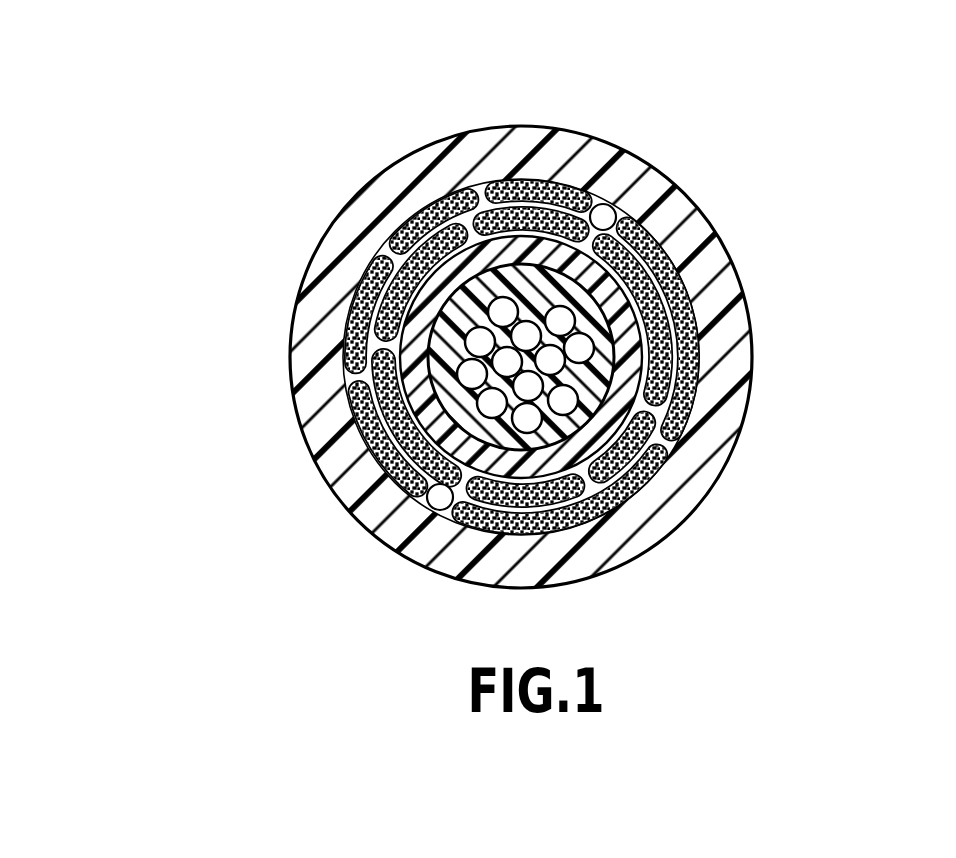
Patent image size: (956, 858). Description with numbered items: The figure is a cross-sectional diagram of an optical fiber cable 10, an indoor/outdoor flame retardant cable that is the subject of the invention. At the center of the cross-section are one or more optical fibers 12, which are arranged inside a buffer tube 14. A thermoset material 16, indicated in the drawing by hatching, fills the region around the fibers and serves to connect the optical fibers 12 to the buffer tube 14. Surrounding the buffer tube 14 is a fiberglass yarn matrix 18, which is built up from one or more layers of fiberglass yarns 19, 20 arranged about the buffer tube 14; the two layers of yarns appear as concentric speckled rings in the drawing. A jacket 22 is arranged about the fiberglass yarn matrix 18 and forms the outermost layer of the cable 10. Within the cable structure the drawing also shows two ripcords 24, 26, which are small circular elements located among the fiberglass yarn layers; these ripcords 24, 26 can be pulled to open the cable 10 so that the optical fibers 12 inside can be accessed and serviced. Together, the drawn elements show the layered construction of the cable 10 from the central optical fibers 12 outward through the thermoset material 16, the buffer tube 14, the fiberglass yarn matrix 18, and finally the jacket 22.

The cable 10 is at (445, 332).
The optical fibers 12 is at (583, 342).
The buffer tube 14 is at (405, 308).
The thermoset material 16 is at (437, 360).
The fiberglass yarn matrix 18 is at (400, 221).
The fiberglass yarns 19 is at (657, 445).
The fiberglass yarns 20 is at (705, 345).
The jacket 22 is at (432, 148).
The ripcord 24 is at (603, 217).
The ripcord 26 is at (442, 498).